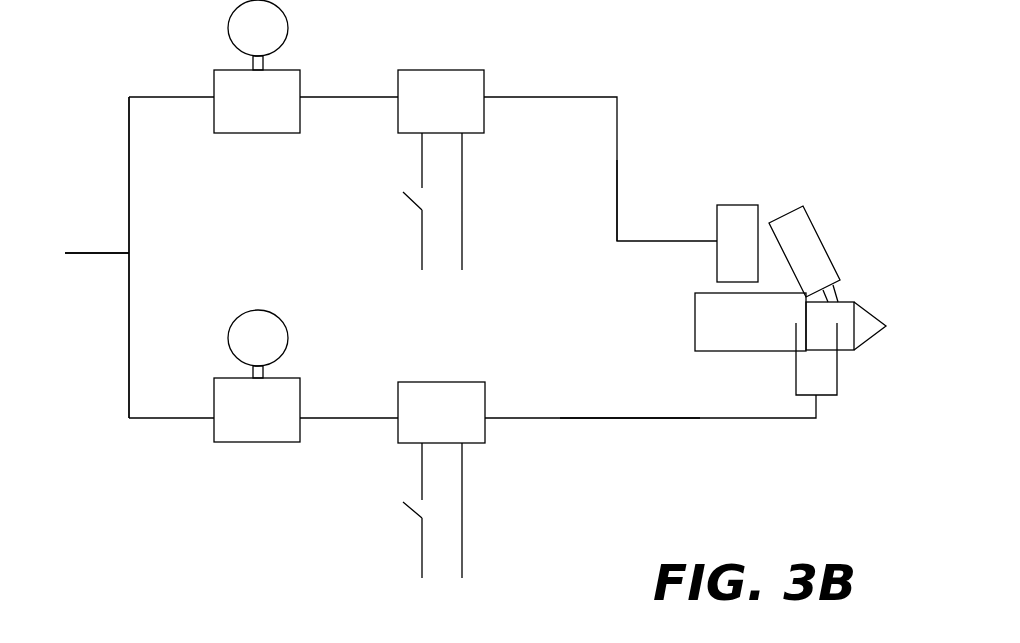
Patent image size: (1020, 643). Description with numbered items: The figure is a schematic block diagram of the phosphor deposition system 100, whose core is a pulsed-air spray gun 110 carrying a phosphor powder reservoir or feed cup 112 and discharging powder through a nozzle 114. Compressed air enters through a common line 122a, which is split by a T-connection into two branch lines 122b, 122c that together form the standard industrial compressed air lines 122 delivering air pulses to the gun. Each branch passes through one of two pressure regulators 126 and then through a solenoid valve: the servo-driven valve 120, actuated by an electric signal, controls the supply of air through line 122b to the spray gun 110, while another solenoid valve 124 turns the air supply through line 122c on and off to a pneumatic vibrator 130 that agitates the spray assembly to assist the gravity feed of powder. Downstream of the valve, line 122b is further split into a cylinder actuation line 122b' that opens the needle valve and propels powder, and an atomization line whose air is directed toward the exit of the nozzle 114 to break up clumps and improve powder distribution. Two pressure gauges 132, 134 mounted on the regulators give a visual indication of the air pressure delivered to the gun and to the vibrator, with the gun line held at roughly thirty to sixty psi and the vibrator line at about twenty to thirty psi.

The phosphor deposition system 100 is at (634, 48).
The pulsed-air spray gun 110 is at (846, 288).
The phosphor powder reservoir or feed cup 112 is at (817, 232).
The nozzle 114 is at (886, 326).
The servo-driven valve 120 is at (460, 382).
The compressed air lines 122 is at (617, 190).
The common line 122a is at (85, 253).
The line 122b is at (86, 358).
The line 122c is at (130, 235).
The cylinder actuation line 122b' is at (734, 358).
The solenoid valve 124 is at (460, 70).
The pressure regulators 126 is at (257, 133).
The pneumatic vibrator 130 is at (737, 205).
The pressure gauge 132 is at (288, 345).
The pressure gauge 134 is at (270, 33).